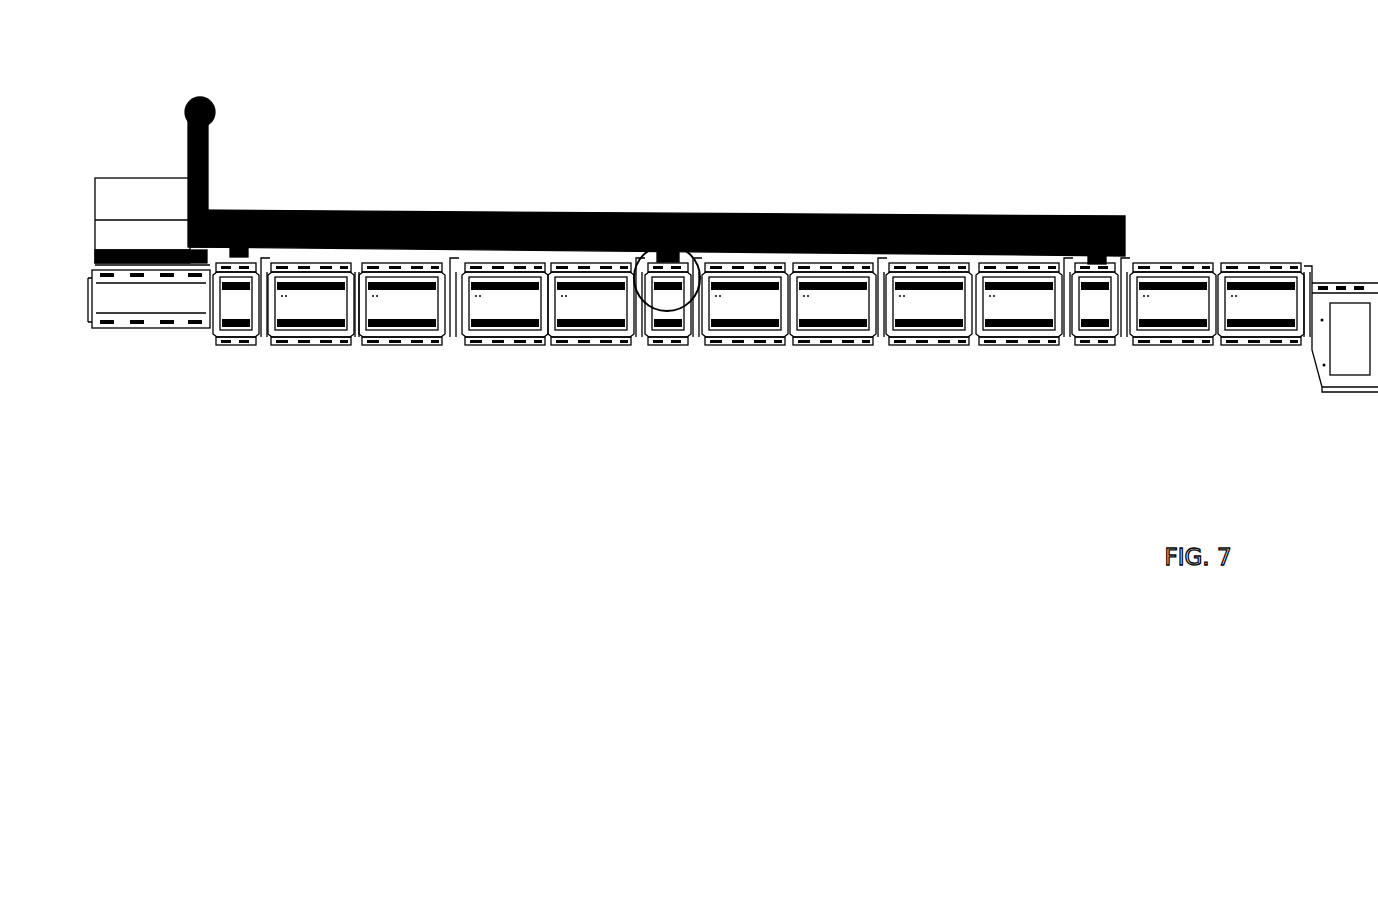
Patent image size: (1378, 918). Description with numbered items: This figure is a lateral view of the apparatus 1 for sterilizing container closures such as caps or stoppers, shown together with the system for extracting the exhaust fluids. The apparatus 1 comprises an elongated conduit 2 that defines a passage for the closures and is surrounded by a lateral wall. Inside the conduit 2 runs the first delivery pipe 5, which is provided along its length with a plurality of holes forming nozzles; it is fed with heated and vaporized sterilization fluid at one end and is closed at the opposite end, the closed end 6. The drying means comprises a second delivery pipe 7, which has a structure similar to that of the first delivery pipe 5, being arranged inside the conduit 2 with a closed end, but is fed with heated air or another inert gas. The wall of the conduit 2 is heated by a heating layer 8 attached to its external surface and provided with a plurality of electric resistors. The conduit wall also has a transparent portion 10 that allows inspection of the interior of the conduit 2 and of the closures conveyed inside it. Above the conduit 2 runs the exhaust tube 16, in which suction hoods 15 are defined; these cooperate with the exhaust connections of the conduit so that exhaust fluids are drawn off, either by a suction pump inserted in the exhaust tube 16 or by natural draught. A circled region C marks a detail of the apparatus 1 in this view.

The apparatus for sterilizing container closures 1 is at (683, 166).
The conduit 2 is at (800, 343).
The first delivery pipe 5 is at (328, 318).
The closed end 6 is at (378, 322).
The second delivery pipe 7 is at (1013, 345).
The heating layer 8 is at (945, 267).
The transparent portion 10 is at (505, 320).
The suction hood 15 is at (263, 210).
The exhaust tube 16 is at (556, 210).
The detail circle C is at (673, 340).